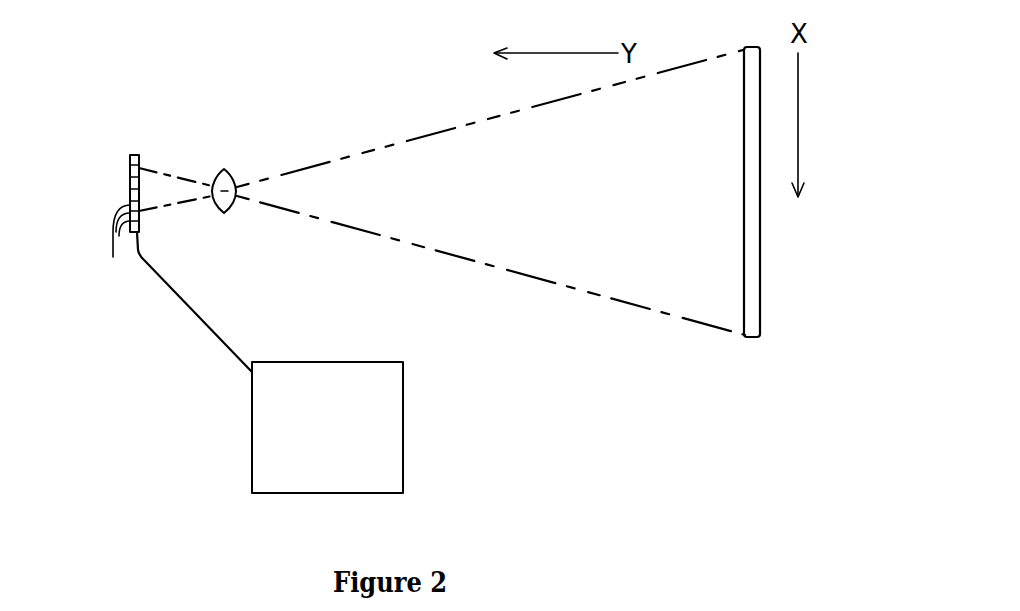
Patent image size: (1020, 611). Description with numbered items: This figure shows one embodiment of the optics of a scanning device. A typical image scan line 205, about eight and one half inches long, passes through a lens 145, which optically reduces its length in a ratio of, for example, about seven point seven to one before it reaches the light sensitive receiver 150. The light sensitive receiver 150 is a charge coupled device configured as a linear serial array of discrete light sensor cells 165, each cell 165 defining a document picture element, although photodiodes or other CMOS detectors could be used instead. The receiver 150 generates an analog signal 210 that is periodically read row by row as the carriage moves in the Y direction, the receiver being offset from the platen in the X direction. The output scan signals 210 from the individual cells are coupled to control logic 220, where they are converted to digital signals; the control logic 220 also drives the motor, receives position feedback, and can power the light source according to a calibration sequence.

The light sensitive receiver 150 is at (130, 146).
The lens 145 is at (232, 173).
The image scan line 205 is at (753, 285).
The light sensor cells 165 is at (109, 249).
The signal 210 is at (190, 318).
The control logic 220 is at (350, 432).